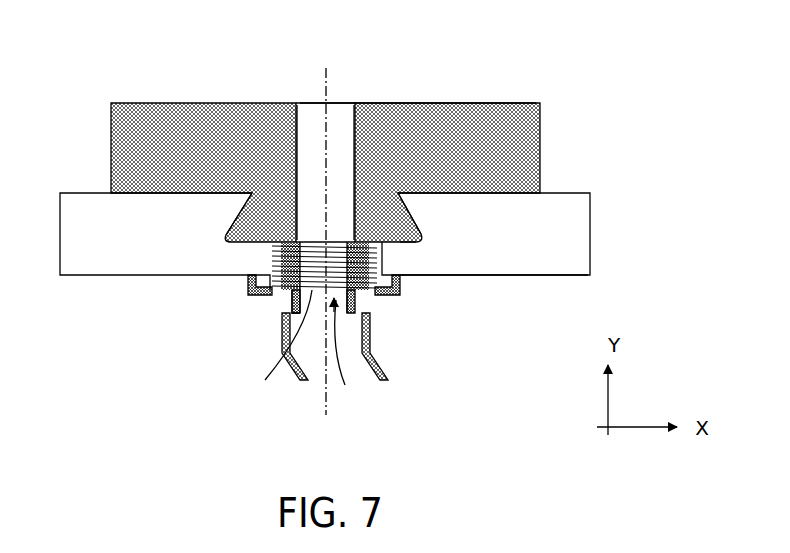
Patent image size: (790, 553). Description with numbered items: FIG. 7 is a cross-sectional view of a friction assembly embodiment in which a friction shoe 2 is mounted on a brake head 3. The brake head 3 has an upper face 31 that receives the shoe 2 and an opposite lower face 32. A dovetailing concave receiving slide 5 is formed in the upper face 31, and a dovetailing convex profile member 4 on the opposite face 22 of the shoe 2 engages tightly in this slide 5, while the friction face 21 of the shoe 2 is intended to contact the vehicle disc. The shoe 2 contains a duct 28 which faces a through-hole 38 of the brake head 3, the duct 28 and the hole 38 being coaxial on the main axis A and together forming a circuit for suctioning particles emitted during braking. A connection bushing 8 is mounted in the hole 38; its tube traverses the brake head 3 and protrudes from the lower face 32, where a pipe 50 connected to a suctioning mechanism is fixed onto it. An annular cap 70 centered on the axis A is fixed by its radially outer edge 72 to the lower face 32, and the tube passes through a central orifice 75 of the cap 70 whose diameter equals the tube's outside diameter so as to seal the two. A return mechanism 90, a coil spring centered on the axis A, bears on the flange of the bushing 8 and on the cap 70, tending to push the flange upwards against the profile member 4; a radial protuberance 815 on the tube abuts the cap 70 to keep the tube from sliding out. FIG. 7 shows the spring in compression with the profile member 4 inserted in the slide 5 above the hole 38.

The friction shoe 2 is at (180, 113).
The friction face 21 is at (433, 103).
The duct 28 is at (339, 138).
The brake head 3 is at (100, 209).
The upper face 31 is at (560, 193).
The lower face 32 is at (517, 277).
The profile member 4 is at (262, 223).
The receiving slide 5 is at (393, 226).
The opposite face 22 is at (405, 247).
The radially outer edge 72 is at (250, 290).
The cap 70 is at (381, 296).
The connection bushing 8 is at (297, 312).
The radial protuberance 815 is at (278, 303).
The return mechanism 90 is at (288, 355).
The pipe 50 is at (372, 355).
The through-hole 38 is at (348, 308).
The central orifice 75 is at (345, 385).
The main axis A is at (328, 258).